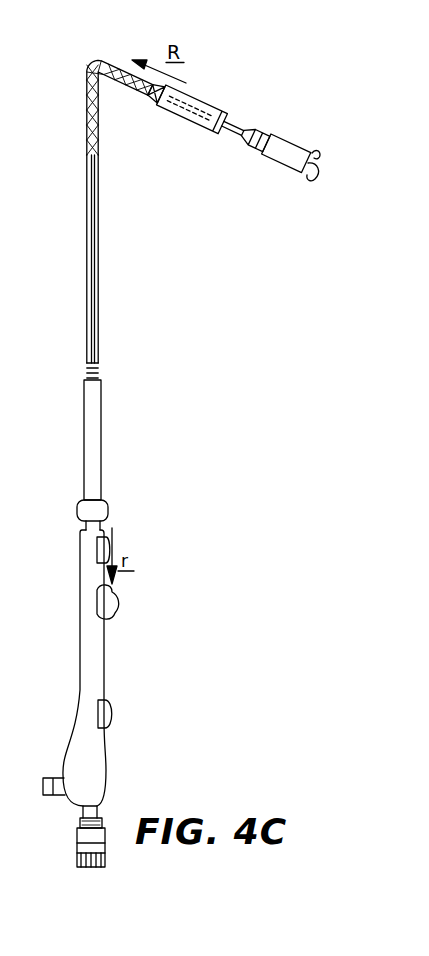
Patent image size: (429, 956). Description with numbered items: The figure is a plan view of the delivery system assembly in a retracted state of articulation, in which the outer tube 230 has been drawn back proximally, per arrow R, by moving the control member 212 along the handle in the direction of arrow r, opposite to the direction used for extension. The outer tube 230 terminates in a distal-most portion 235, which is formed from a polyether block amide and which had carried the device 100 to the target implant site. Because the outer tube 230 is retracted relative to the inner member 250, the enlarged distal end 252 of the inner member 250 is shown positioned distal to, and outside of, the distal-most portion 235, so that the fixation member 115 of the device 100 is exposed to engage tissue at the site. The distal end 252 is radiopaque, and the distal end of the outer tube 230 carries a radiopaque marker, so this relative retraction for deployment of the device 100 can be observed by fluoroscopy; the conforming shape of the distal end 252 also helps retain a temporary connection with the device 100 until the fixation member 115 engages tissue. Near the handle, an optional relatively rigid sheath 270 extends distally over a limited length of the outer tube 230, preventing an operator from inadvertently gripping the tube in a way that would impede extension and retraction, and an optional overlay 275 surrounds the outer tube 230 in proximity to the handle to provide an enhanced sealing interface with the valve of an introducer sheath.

The outer tube 230 is at (120, 103).
The distal-most portion 235 is at (196, 98).
The inner member 250 is at (250, 115).
The distal end 252 is at (260, 146).
The device 100 is at (290, 158).
The fixation member 115 is at (321, 157).
The sheath 270 is at (98, 338).
The overlay 275 is at (90, 460).
The control member 212 is at (140, 606).